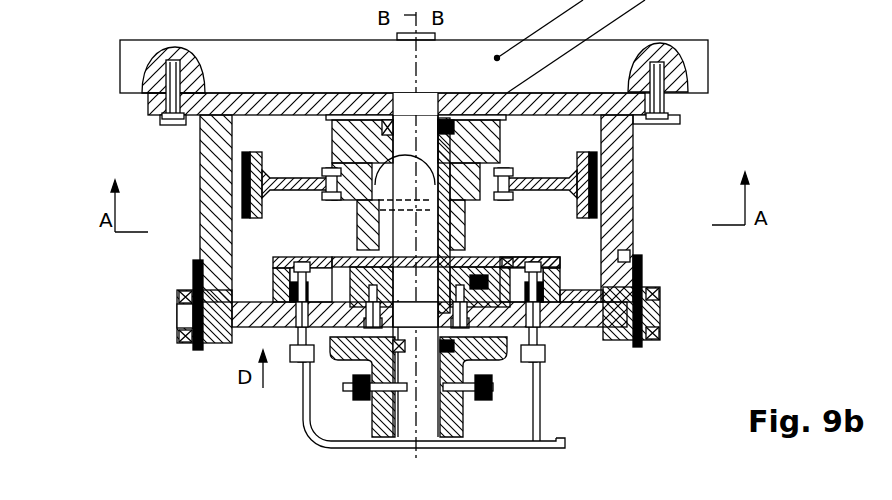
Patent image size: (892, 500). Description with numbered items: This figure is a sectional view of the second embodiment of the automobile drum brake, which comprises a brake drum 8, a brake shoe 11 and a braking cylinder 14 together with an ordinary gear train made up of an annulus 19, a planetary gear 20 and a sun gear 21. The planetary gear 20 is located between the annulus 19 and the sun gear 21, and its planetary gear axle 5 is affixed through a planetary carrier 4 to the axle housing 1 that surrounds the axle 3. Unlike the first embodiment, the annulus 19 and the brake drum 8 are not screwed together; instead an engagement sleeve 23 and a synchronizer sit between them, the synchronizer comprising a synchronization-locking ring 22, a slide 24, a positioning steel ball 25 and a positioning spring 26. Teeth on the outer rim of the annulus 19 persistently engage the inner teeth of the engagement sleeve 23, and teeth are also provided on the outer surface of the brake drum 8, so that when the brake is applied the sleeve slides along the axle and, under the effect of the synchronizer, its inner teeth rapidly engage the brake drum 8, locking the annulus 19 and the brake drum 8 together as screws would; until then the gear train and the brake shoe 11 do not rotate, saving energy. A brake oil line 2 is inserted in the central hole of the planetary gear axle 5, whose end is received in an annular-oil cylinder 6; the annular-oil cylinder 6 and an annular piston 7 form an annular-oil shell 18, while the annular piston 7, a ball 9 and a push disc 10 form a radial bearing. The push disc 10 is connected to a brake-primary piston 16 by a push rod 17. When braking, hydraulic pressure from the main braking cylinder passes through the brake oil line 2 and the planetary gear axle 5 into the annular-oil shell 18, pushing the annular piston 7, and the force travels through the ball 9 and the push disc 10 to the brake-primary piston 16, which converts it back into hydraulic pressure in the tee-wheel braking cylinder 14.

The axle housing 1 is at (413, 400).
The brake oil line 2 is at (398, 420).
The axle 3 is at (310, 452).
The planetary carrier 4 is at (548, 348).
The planetary gear axle 5 is at (548, 325).
The annular-oil cylinder 6 is at (658, 310).
The annular piston 7 is at (658, 287).
The brake drum 8 is at (622, 257).
The ball 9 is at (510, 250).
The push disc 10 is at (535, 258).
The brake shoe 11 is at (593, 170).
The braking cylinder 14 is at (383, 165).
The brake-primary piston 16 is at (330, 172).
The push rod 17 is at (385, 205).
The annular-oil shell 18 is at (273, 275).
The annulus 19 is at (205, 272).
The planetary gear 20 is at (290, 352).
The sun gear 21 is at (378, 368).
The synchronization-locking ring 22 is at (185, 282).
The engagement sleeve 23 is at (193, 285).
The slide 24 is at (185, 300).
The positioning steel ball 25 is at (187, 317).
The spring 26 is at (187, 328).